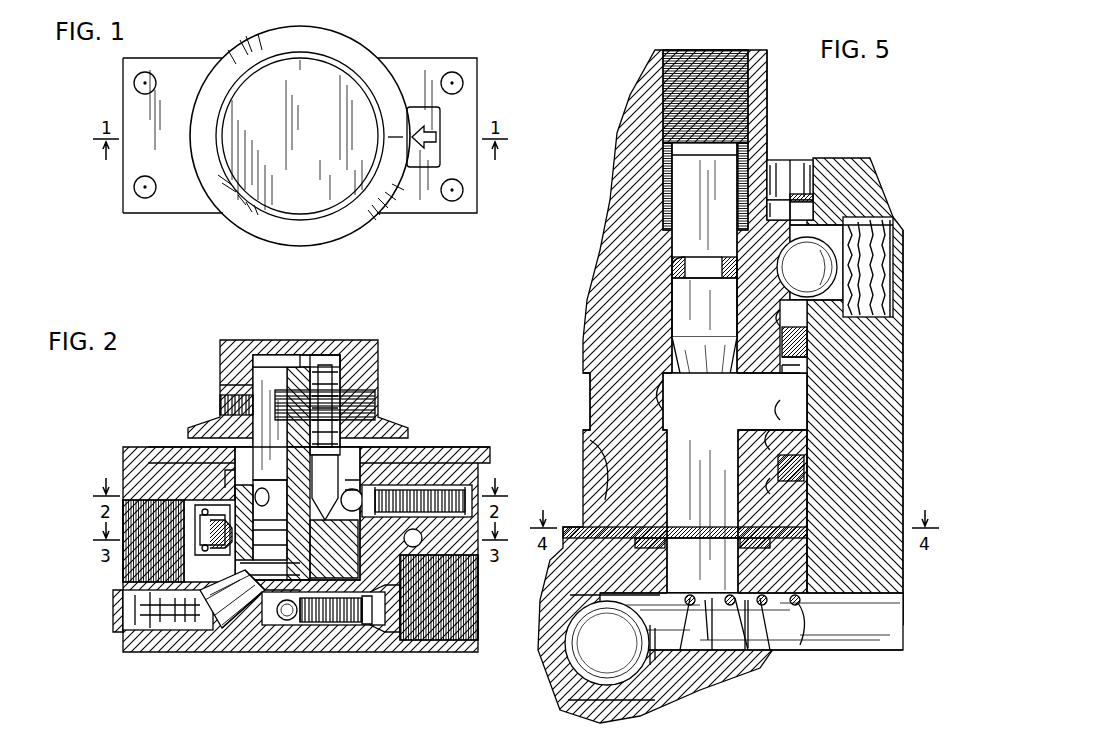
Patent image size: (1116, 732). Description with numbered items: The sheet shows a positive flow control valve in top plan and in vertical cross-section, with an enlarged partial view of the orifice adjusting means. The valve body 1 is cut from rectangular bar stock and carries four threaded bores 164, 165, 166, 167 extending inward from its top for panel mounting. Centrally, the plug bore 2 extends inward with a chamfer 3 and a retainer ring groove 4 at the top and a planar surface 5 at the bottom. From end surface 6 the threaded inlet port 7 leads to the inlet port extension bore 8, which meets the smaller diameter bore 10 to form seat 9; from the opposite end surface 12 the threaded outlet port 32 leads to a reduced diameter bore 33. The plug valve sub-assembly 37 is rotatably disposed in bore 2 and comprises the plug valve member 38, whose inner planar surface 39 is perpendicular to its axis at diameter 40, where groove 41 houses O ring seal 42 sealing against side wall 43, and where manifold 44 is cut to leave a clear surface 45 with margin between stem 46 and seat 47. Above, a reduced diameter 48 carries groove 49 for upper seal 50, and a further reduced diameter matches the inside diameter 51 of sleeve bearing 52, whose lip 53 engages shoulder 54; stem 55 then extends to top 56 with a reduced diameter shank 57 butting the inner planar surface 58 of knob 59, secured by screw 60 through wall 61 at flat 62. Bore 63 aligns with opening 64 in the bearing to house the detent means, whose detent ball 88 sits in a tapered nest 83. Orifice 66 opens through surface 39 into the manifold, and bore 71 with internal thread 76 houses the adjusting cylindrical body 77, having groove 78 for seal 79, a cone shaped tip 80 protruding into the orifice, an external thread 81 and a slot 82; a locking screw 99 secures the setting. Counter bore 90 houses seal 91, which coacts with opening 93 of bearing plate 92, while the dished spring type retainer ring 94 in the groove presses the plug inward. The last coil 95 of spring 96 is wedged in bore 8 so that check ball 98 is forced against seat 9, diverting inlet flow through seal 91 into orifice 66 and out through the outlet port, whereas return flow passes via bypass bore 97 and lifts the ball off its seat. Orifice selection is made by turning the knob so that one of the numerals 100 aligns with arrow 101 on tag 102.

In FIG. 1, the positive flow control valve body 1 is at (185, 80).
In FIG. 5, the plug bore 2 is at (774, 162).
In FIG. 5, the chamfer 3 is at (797, 166).
In FIG. 5, the retainer ring groove 4 is at (812, 202).
In FIG. 5, the planar surface 5 is at (598, 542).
In FIG. 2, the end surface 6 is at (478, 645).
In FIG. 2, the inlet port 7 is at (455, 602).
In FIG. 2, the inlet port extension bore 8 is at (375, 612).
In FIG. 5, the inlet port extension bore 8 is at (708, 615).
In FIG. 2, the seat 9 is at (265, 607).
In FIG. 5, the seat 9 is at (575, 688).
In FIG. 2, the smaller diameter bore 10 is at (248, 605).
In FIG. 2, the end surface 12 is at (123, 643).
In FIG. 2, the outlet port 32 is at (135, 570).
In FIG. 2, the reduced diameter bore 33 is at (240, 469).
In FIG. 2, the plug valve sub-assembly 37 is at (270, 380).
In FIG. 5, the plug valve member 38 is at (634, 122).
In FIG. 5, the planar surface 39 is at (833, 613).
In FIG. 5, the diameter 40 is at (878, 553).
In FIG. 5, the groove 41 is at (795, 505).
In FIG. 5, the O ring seal 42 is at (795, 483).
In FIG. 5, the side wall 43 is at (795, 465).
In FIG. 5, the manifold 44 is at (790, 420).
In FIG. 5, the clear surface 45 is at (795, 440).
In FIG. 5, the stem 46 is at (588, 395).
In FIG. 5, the seat 47 is at (660, 425).
In FIG. 5, the reduced diameter 48 is at (780, 406).
In FIG. 5, the groove 49 is at (797, 376).
In FIG. 5, the upper seal 50 is at (797, 358).
In FIG. 5, the inside diameter 51 is at (815, 338).
In FIG. 5, the sleeve bearing 52 is at (812, 315).
In FIG. 5, the lip 53 is at (815, 197).
In FIG. 5, the shoulder 54 is at (815, 215).
In FIG. 2, the stem 55 is at (215, 447).
In FIG. 5, the stem 55 is at (767, 77).
In FIG. 2, the top 56 is at (262, 343).
In FIG. 2, the reduced diameter shank 57 is at (300, 368).
In FIG. 2, the inner planar surface 58 is at (336, 356).
In FIG. 1, the knob 59 is at (315, 129).
In FIG. 2, the knob 59 is at (378, 356).
In FIG. 2, the screw 60 is at (220, 405).
In FIG. 2, the wall 61 is at (220, 386).
In FIG. 2, the flat 62 is at (253, 372).
In FIG. 5, the bore 63 is at (850, 245).
In FIG. 5, the diameter opening 64 is at (845, 229).
In FIG. 5, the orifice 66 is at (715, 466).
In FIG. 5, the bore 71 is at (675, 305).
In FIG. 5, the internal thread 76 is at (668, 170).
In FIG. 5, the cylindrical body 77 is at (690, 185).
In FIG. 5, the groove 78 is at (690, 260).
In FIG. 5, the seal 79 is at (680, 268).
In FIG. 5, the cone shaped tip 80 is at (700, 378).
In FIG. 5, the external thread 81 is at (693, 62).
In FIG. 2, the slot 82 is at (340, 405).
In FIG. 5, the tapered nest 83 is at (763, 273).
In FIG. 5, the detent ball 88 is at (808, 273).
In FIG. 5, the counter bore 90 is at (808, 628).
In FIG. 5, the seal 91 is at (768, 615).
In FIG. 5, the bearing plate 92 is at (605, 478).
In FIG. 5, the opening 93 is at (748, 612).
In FIG. 2, the dished spring type retainer ring 94 is at (228, 493).
In FIG. 5, the dished spring type retainer ring 94 is at (800, 190).
In FIG. 2, the last coil 95 is at (366, 624).
In FIG. 5, the last coil 95 is at (802, 622).
In FIG. 2, the spring 96 is at (318, 622).
In FIG. 2, the bypass bore 97 is at (215, 602).
In FIG. 2, the check ball 98 is at (286, 620).
In FIG. 5, the check ball 98 is at (615, 654).
In FIG. 2, the locking screw 99 is at (345, 398).
In FIG. 1, the numerals 100 is at (398, 134).
In FIG. 1, the arrow 101 is at (430, 137).
In FIG. 1, the tag 102 is at (418, 160).
In FIG. 1, the threaded bore 164 is at (452, 72).
In FIG. 1, the threaded bore 165 is at (463, 195).
In FIG. 1, the threaded bore 166 is at (145, 198).
In FIG. 1, the threaded bore 167 is at (134, 82).